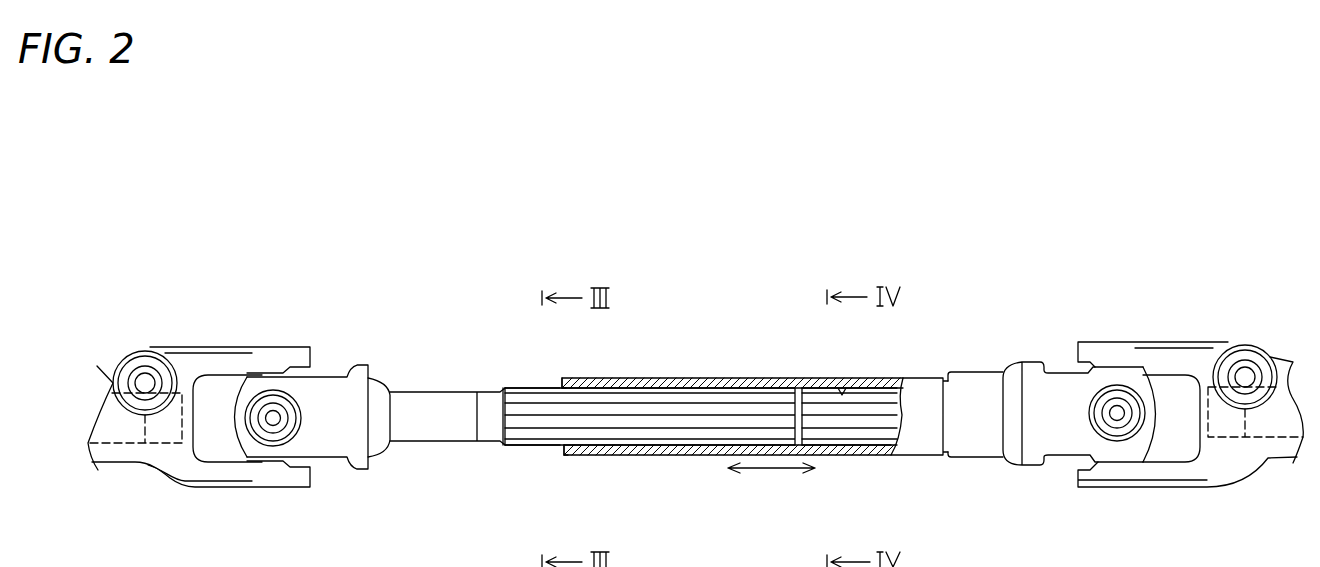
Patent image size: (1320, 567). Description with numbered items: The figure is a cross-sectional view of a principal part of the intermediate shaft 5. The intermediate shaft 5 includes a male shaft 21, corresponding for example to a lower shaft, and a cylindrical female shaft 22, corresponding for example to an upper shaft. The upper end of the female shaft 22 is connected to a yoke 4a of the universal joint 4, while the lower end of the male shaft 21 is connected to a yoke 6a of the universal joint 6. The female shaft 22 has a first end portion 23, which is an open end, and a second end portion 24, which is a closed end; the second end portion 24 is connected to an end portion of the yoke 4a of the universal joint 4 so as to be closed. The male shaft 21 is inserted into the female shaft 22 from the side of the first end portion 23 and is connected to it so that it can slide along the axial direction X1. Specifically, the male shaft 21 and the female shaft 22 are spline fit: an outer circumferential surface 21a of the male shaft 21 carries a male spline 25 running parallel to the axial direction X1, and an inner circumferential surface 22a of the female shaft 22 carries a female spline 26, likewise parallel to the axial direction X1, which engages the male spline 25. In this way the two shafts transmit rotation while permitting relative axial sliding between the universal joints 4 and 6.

The universal joint 4 is at (1185, 329).
The yoke 4a is at (1073, 436).
The intermediate shaft 5 is at (653, 337).
The universal joint 6 is at (221, 334).
The yoke 6a is at (333, 447).
The male shaft 21 is at (461, 379).
The outer circumferential surface 21a is at (527, 446).
The female shaft 22 is at (704, 364).
The inner circumferential surface 22a is at (842, 395).
The first end portion 23 is at (572, 378).
The second end portion 24 is at (967, 382).
The male spline 25 is at (615, 430).
The female spline 26 is at (843, 424).
The axial direction X1 is at (770, 470).